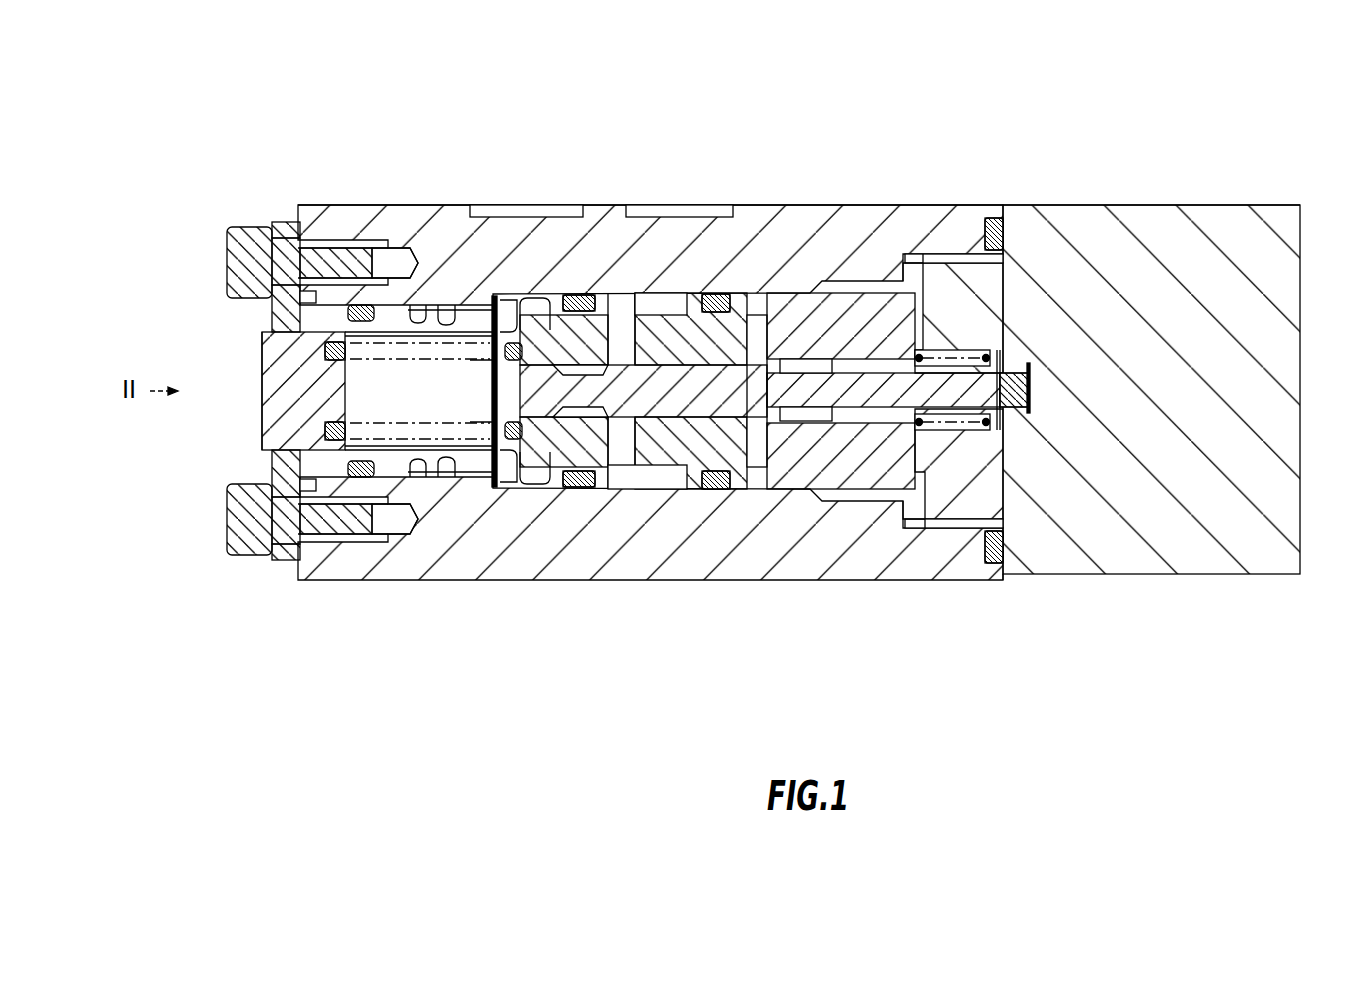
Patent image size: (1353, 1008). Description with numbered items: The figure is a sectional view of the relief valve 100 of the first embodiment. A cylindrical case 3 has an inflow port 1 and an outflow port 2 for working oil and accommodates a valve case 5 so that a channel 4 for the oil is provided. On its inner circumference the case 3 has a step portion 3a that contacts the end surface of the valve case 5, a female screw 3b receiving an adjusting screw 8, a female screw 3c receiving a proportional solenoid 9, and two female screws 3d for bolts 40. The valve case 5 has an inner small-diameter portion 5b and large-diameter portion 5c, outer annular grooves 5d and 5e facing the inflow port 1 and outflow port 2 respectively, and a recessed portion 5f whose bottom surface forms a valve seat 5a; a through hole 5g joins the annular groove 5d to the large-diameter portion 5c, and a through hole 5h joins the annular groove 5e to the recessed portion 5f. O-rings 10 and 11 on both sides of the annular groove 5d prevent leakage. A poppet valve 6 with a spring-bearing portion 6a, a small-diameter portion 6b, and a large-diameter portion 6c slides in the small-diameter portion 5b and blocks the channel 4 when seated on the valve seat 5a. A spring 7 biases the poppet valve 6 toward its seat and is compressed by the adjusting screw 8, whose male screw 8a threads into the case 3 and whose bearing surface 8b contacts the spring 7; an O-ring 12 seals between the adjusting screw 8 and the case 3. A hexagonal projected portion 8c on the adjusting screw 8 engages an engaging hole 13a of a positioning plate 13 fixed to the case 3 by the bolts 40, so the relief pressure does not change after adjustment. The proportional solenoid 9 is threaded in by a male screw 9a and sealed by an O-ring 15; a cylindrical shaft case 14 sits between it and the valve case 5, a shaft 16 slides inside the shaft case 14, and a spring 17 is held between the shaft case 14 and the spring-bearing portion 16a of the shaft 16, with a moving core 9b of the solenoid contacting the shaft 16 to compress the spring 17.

The relief valve 100 is at (208, 160).
The inflow port 1 is at (712, 265).
The outflow port 2 is at (527, 292).
The O-ring 10 is at (628, 292).
The case 3 is at (300, 565).
The step portion 3a is at (495, 488).
The female screw 3b is at (412, 250).
The female screw 3c is at (935, 262).
The female screws 3d is at (385, 240).
The channel 4 is at (598, 352).
The valve case 5 is at (725, 492).
The valve seat 5a is at (575, 488).
The small-diameter portion 5b is at (690, 492).
The large-diameter portion 5c is at (605, 492).
The annular groove 5d is at (752, 315).
The annular groove 5e is at (512, 340).
The recessed portion 5f is at (500, 298).
The through hole 5g is at (700, 300).
The through hole 5h is at (548, 298).
The poppet valve 6 is at (605, 420).
The spring-bearing portion 6a is at (514, 442).
The small-diameter portion 6b is at (635, 492).
The large-diameter portion 6c is at (775, 492).
The spring 7 is at (483, 450).
The adjusting screw 8 is at (345, 545).
The male screw 8a is at (420, 540).
The bearing surface 8b is at (345, 400).
The projected portion 8c is at (265, 440).
The proportional solenoid 9 is at (1190, 576).
The male screw 9a is at (990, 260).
The moving core 9b is at (1000, 562).
The O-ring 11 is at (720, 294).
The O-ring 12 is at (358, 305).
The positioning plate 13 is at (300, 313).
The engaging hole 13a is at (290, 337).
The shaft case 14 is at (865, 500).
The O-ring 15 is at (982, 565).
The shaft 16 is at (920, 500).
The spring-bearing portion 16a is at (1008, 330).
The spring 17 is at (962, 432).
The bolts 40 is at (240, 226).